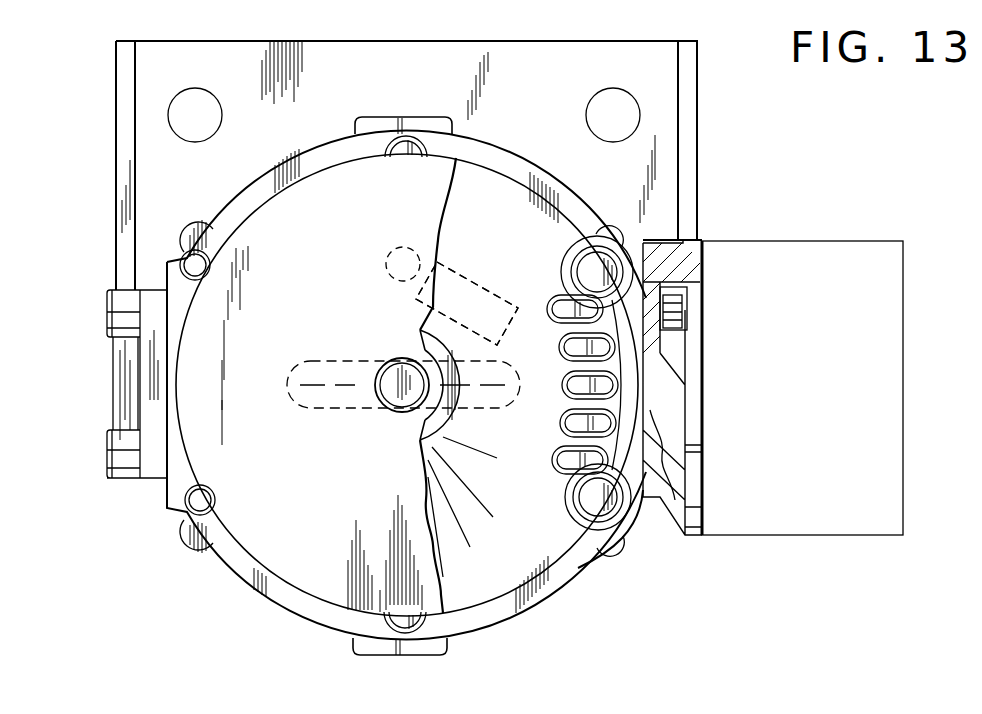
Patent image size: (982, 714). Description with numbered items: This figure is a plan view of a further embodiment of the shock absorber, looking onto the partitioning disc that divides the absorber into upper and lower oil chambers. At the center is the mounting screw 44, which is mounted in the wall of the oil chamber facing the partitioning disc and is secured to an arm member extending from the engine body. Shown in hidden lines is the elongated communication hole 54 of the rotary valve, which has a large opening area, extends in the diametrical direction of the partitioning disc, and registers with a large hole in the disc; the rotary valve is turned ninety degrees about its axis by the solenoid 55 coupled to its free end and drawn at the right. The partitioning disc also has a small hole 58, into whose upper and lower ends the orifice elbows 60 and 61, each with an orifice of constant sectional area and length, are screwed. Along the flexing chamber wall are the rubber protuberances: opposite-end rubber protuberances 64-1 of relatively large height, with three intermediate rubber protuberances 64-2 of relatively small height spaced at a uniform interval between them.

The mounting screw 44 is at (400, 413).
The communication hole 54 is at (346, 410).
The solenoid 55 is at (800, 240).
The small hole 58 is at (386, 266).
The orifice elbow 60 is at (462, 276).
The orifice elbow 61 is at (462, 276).
The opposite-end rubber protuberances 64-1 is at (552, 296).
The intermediate rubber protuberances 64-2 is at (563, 385).